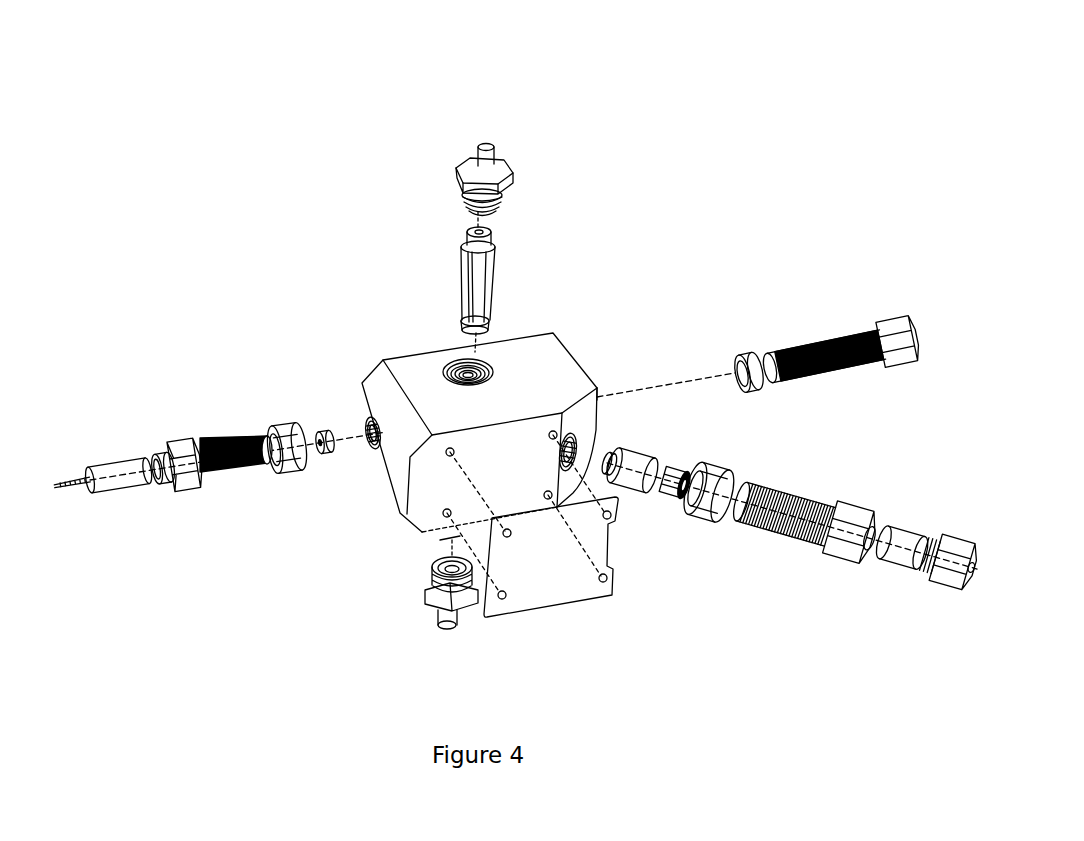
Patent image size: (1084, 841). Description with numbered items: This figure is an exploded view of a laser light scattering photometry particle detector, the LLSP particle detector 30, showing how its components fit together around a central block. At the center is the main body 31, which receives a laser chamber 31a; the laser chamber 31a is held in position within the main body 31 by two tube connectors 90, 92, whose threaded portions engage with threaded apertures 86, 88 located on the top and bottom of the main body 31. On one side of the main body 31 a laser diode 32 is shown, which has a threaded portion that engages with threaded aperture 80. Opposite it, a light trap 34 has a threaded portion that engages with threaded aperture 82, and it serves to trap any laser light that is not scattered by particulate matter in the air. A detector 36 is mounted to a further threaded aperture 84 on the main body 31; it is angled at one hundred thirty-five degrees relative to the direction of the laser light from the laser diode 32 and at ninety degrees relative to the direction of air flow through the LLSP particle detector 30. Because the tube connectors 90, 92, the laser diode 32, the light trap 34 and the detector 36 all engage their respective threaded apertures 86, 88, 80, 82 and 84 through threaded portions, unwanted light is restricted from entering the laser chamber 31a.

The LLSP particle detector 30 is at (661, 91).
The main body 31 is at (548, 357).
The laser chamber 31a is at (482, 272).
The laser diode 32 is at (198, 388).
The light trap 34 is at (836, 285).
The detector 36 is at (806, 582).
The threaded aperture 80 is at (366, 447).
The threaded aperture 82 is at (604, 384).
The threaded aperture 84 is at (580, 446).
The threaded aperture 86 is at (460, 360).
The threaded aperture 88 is at (447, 541).
The tube connector 90 is at (500, 172).
The tube connector 92 is at (455, 607).